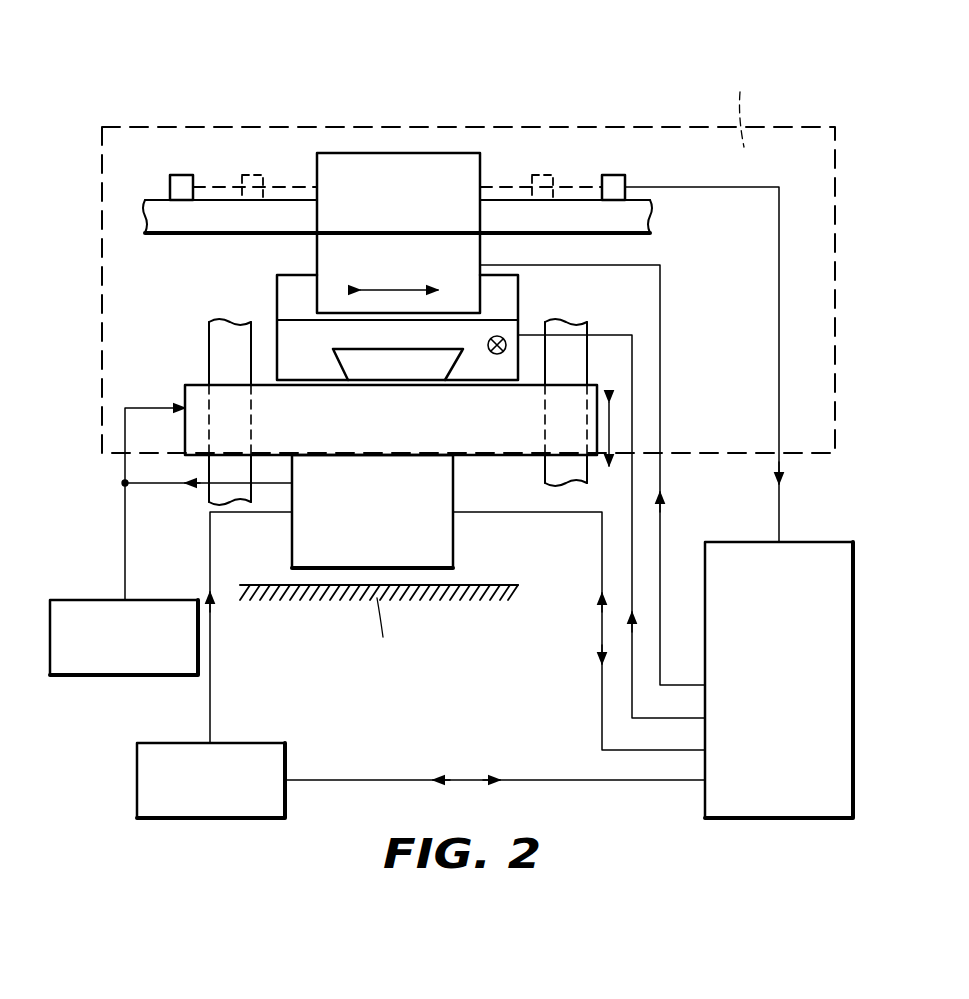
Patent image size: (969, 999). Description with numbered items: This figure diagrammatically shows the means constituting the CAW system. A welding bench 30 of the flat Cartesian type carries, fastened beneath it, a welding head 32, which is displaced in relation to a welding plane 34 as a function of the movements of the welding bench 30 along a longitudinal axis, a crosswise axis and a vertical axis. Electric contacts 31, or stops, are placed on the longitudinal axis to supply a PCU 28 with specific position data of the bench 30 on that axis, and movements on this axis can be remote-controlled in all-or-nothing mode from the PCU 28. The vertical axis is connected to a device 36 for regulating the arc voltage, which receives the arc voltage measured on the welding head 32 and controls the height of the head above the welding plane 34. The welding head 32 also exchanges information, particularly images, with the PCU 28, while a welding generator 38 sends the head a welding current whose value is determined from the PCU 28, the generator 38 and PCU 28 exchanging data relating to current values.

The PCU 28 is at (773, 810).
The welding bench 30 is at (826, 200).
The electric contacts 31 is at (193, 176).
The welding head 32 is at (447, 533).
The welding plane 34 is at (492, 600).
The device for regulating the arc voltage 36 is at (84, 605).
The welding generator 38 is at (137, 783).